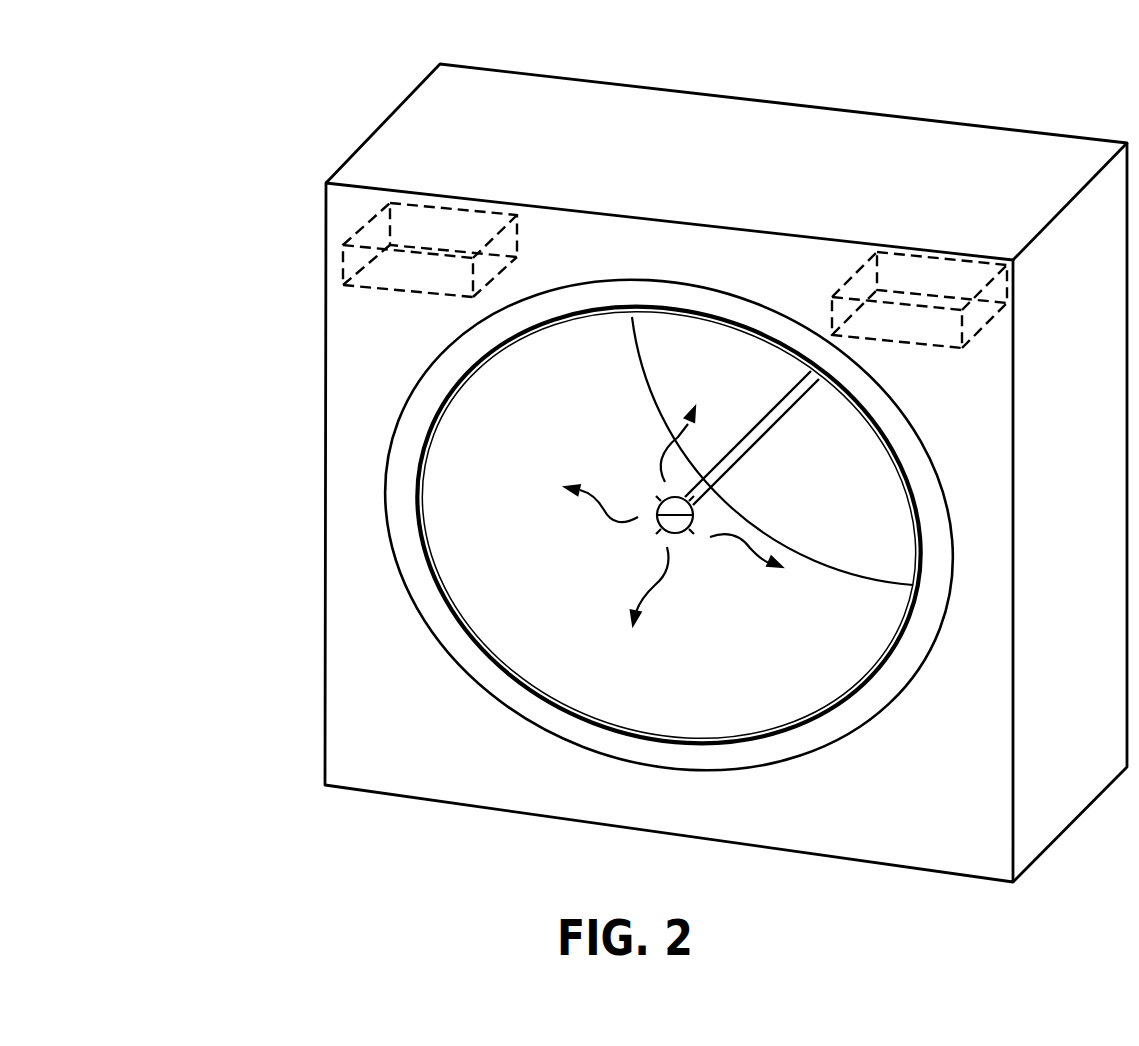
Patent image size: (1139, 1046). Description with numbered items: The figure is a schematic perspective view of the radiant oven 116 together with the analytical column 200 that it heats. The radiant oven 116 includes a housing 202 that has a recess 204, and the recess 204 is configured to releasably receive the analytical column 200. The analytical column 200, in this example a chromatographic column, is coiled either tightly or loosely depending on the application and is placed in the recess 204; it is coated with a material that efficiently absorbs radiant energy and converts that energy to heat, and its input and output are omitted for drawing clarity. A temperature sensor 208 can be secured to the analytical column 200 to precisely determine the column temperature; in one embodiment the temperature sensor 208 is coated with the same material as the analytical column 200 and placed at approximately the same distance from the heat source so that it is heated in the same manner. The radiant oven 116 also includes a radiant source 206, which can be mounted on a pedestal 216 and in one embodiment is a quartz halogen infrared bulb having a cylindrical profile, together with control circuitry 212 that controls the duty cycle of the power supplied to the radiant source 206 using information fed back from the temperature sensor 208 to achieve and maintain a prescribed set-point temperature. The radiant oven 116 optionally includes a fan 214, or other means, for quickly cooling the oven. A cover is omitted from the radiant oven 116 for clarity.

The radiant oven 116 is at (218, 50).
The analytical column 200 is at (875, 682).
The housing 202 is at (325, 215).
The recess 204 is at (944, 610).
The radiant source 206 is at (659, 495).
The temperature sensor 208 is at (425, 570).
The control circuitry 212 is at (832, 311).
The fan 214 is at (478, 212).
The pedestal 216 is at (772, 427).